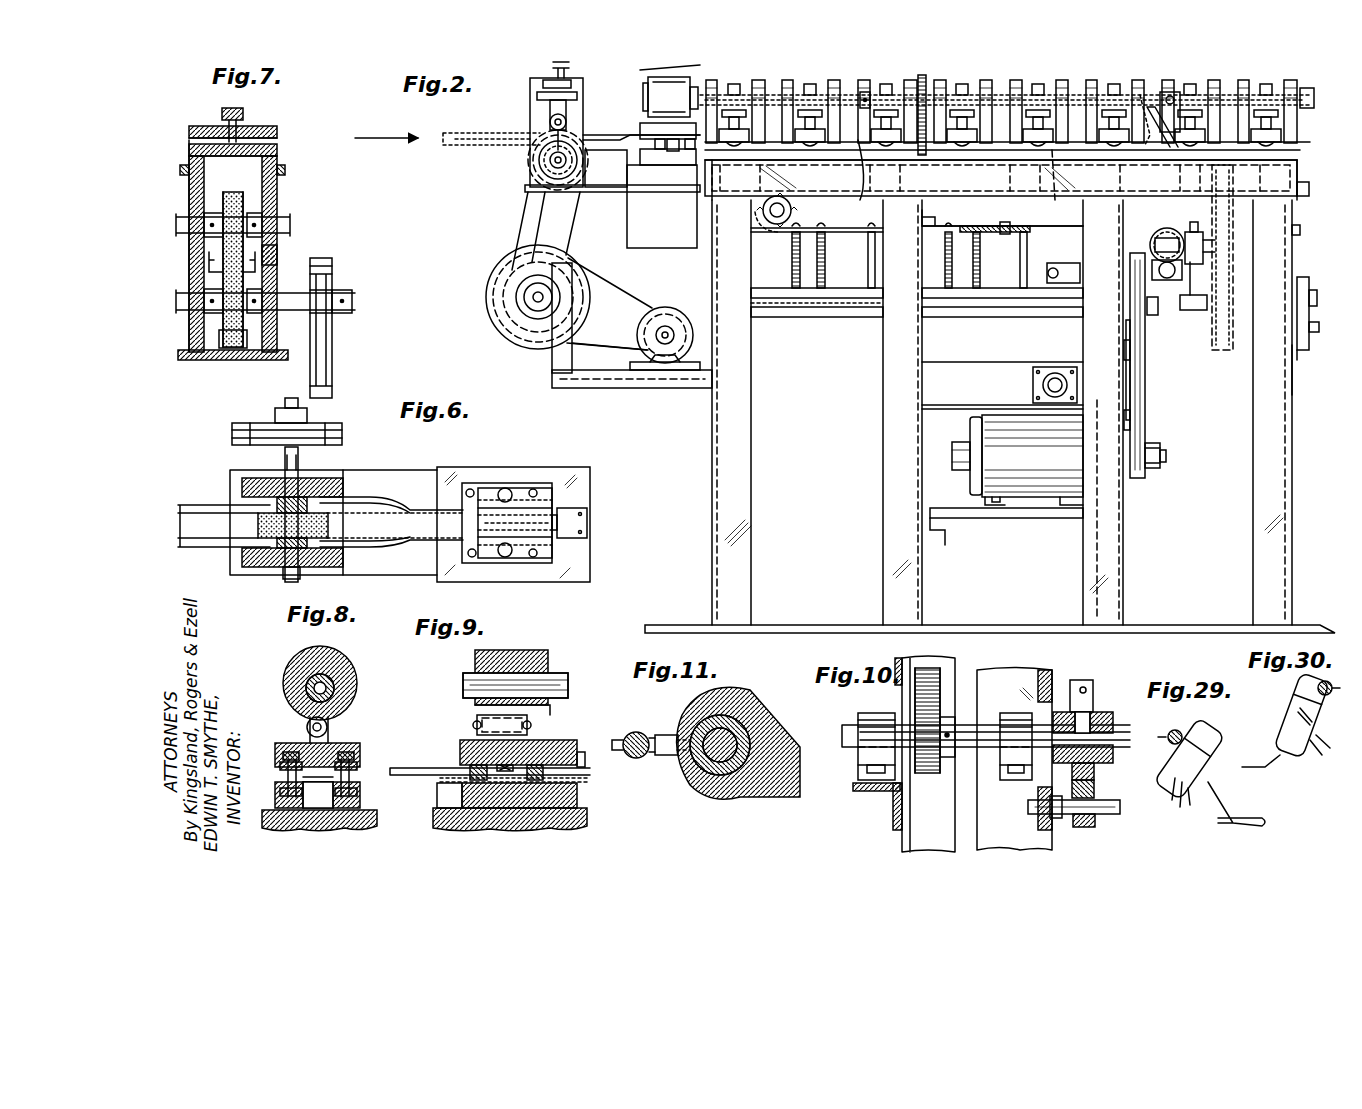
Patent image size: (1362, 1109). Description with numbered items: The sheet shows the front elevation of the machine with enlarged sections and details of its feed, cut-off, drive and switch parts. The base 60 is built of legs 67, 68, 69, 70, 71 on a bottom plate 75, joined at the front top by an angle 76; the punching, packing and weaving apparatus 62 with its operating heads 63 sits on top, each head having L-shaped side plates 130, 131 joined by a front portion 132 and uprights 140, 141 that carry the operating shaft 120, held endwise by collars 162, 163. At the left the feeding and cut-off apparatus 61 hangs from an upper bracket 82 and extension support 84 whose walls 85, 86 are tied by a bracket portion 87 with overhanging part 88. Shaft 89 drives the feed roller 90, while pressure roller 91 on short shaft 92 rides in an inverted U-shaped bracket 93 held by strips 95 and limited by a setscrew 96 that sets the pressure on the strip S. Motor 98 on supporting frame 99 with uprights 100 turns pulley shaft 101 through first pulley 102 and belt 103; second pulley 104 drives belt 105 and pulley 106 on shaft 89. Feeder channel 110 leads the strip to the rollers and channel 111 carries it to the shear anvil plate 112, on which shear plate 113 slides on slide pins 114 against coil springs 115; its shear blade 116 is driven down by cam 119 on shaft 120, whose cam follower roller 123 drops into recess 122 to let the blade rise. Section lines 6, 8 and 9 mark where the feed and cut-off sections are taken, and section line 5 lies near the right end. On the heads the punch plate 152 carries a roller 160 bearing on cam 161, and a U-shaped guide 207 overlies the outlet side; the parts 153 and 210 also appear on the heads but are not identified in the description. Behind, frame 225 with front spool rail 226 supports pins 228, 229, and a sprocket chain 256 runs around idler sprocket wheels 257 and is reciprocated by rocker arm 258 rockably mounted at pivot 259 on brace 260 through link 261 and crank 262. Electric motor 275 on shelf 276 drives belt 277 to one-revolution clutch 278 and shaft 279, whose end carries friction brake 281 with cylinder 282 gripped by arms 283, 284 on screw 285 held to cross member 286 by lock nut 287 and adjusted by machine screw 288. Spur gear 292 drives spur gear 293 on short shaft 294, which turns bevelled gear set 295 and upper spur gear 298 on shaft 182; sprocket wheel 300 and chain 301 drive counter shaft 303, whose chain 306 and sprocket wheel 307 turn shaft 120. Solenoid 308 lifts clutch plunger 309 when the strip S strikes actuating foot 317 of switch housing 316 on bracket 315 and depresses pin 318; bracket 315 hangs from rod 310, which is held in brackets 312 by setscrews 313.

In FIG. 2, the section line 5 is at (1215, 66).
In FIG. 2, the section line 6 is at (700, 58).
In FIG. 6, the section line 8 is at (505, 612).
In FIG. 9, the section line 8 is at (503, 619).
In FIG. 6, the section line 9 is at (620, 523).
In FIG. 2, the base or frame 60 is at (1298, 498).
In FIG. 10, the base or frame 60 is at (900, 846).
In FIG. 7, the feeding and cut-off apparatus 61 is at (312, 160).
In FIG. 2, the feeding and cut-off apparatus 61 is at (500, 204).
In FIG. 6, the feeding and cut-off apparatus 61 is at (595, 470).
In FIG. 8, the feeding and cut-off apparatus 61 is at (343, 655).
In FIG. 9, the feeding and cut-off apparatus 61 is at (590, 655).
In FIG. 2, the punching, packing, and weaving apparatus 62 is at (1095, 95).
In FIG. 2, the operating head 63 is at (865, 80).
In FIG. 11, the operating head 63 is at (775, 798).
In FIG. 2, the leg 67 is at (752, 551).
In FIG. 2, the leg 68 is at (912, 581).
In FIG. 2, the leg 69 is at (1088, 589).
In FIG. 2, the leg 70 is at (1272, 586).
In FIG. 10, the leg 71 is at (1000, 688).
In FIG. 2, the bottom plate 75 is at (1168, 625).
In FIG. 2, the angle 76 is at (817, 243).
In FIG. 2, the upper bracket 82 is at (628, 164).
In FIG. 6, the upper bracket 82 is at (565, 467).
In FIG. 8, the upper bracket 82 is at (372, 830).
In FIG. 9, the upper bracket 82 is at (588, 825).
In FIG. 7, the extension support 84 is at (258, 360).
In FIG. 2, the extension support 84 is at (607, 190).
In FIG. 6, the extension support 84 is at (385, 478).
In FIG. 7, the vertical wall 85 is at (192, 360).
In FIG. 2, the vertical wall 85 is at (535, 192).
In FIG. 6, the vertical wall 85 is at (248, 568).
In FIG. 7, the vertical wall 86 is at (277, 333).
In FIG. 6, the vertical wall 86 is at (240, 475).
In FIG. 7, the bracket portion 87 is at (277, 144).
In FIG. 2, the bracket portion 87 is at (530, 82).
In FIG. 7, the overhanging part 88 is at (262, 126).
In FIG. 2, the overhanging part 88 is at (571, 82).
In FIG. 7, the shaft 89 is at (353, 301).
In FIG. 2, the shaft 89 is at (533, 160).
In FIG. 6, the shaft 89 is at (285, 454).
In FIG. 7, the feed roller 90 is at (233, 348).
In FIG. 2, the feed roller 90 is at (536, 170).
In FIG. 7, the pressure roller 91 is at (236, 190).
In FIG. 2, the pressure roller 91 is at (548, 110).
In FIG. 6, the pressure roller 91 is at (300, 520).
In FIG. 7, the short shaft 92 is at (290, 222).
In FIG. 2, the short shaft 92 is at (568, 118).
In FIG. 6, the short shaft 92 is at (288, 580).
In FIG. 7, the inverted U-shaped bracket 93 is at (277, 195).
In FIG. 2, the inverted U-shaped bracket 93 is at (567, 104).
In FIG. 6, the inverted U-shaped bracket 93 is at (302, 478).
In FIG. 7, the strip 95 is at (185, 165).
In FIG. 2, the strip 95 is at (540, 95).
In FIG. 7, the setscrew 96 is at (244, 109).
In FIG. 2, the setscrew 96 is at (553, 65).
In FIG. 2, the motor 98 is at (672, 308).
In FIG. 2, the supporting frame 99 is at (652, 388).
In FIG. 2, the vertical upright 100 is at (552, 365).
In FIG. 2, the pulley shaft 101 is at (526, 300).
In FIG. 2, the first pulley 102 is at (518, 320).
In FIG. 2, the belt 103 is at (612, 350).
In FIG. 2, the second pulley 104 is at (486, 297).
In FIG. 7, the belt 105 is at (330, 363).
In FIG. 2, the belt 105 is at (515, 235).
In FIG. 6, the belt 105 is at (240, 432).
In FIG. 7, the pulley 106 is at (333, 271).
In FIG. 2, the pulley 106 is at (530, 157).
In FIG. 6, the pulley 106 is at (318, 418).
In FIG. 7, the feeder channel 110 is at (258, 265).
In FIG. 2, the feeder channel 110 is at (458, 147).
In FIG. 6, the feeder channel 110 is at (196, 550).
In FIG. 2, the channel 111 is at (592, 145).
In FIG. 6, the channel 111 is at (400, 550).
In FIG. 8, the channel 111 is at (330, 785).
In FIG. 9, the channel 111 is at (420, 775).
In FIG. 2, the shear anvil plate 112 is at (668, 168).
In FIG. 8, the shear anvil plate 112 is at (310, 808).
In FIG. 9, the shear anvil plate 112 is at (578, 800).
In FIG. 2, the shear plate 113 is at (640, 130).
In FIG. 6, the shear plate 113 is at (462, 490).
In FIG. 8, the shear plate 113 is at (305, 743).
In FIG. 9, the shear plate 113 is at (572, 736).
In FIG. 2, the slide pin 114 is at (657, 150).
In FIG. 6, the slide pin 114 is at (470, 489).
In FIG. 8, the slide pin 114 is at (358, 770).
In FIG. 9, the slide pin 114 is at (470, 770).
In FIG. 6, the coil spring 115 is at (502, 488).
In FIG. 8, the coil spring 115 is at (283, 755).
In FIG. 9, the coil spring 115 is at (503, 808).
In FIG. 2, the shear blade 116 is at (670, 97).
In FIG. 6, the shear blade 116 is at (588, 530).
In FIG. 9, the shear blade 116 is at (585, 760).
In FIG. 2, the cam 119 is at (640, 84).
In FIG. 6, the cam 119 is at (556, 495).
In FIG. 8, the cam 119 is at (355, 673).
In FIG. 9, the cam 119 is at (520, 650).
In FIG. 2, the operating shaft 120 is at (710, 95).
In FIG. 6, the operating shaft 120 is at (556, 505).
In FIG. 8, the operating shaft 120 is at (300, 672).
In FIG. 9, the operating shaft 120 is at (560, 673).
In FIG. 11, the operating shaft 120 is at (718, 752).
In FIG. 8, the indentation 122 is at (352, 706).
In FIG. 9, the indentation 122 is at (530, 722).
In FIG. 2, the cam follower roller 123 is at (676, 155).
In FIG. 8, the cam follower roller 123 is at (312, 690).
In FIG. 9, the cam follower roller 123 is at (478, 718).
In FIG. 2, the side plate 130 is at (716, 190).
In FIG. 2, the side plate 131 is at (822, 190).
In FIG. 2, the connecting portion 132 is at (940, 190).
In FIG. 2, the upright 140 is at (1290, 90).
In FIG. 11, the upright 140 is at (760, 678).
In FIG. 2, the upright 141 is at (910, 88).
In FIG. 2, the punch plate 152 is at (1290, 131).
In FIG. 2, the pin 153 is at (1069, 175).
In FIG. 2, the roller 160 is at (1056, 88).
In FIG. 2, the cam 161 is at (1310, 114).
In FIG. 2, the collar 162 is at (670, 65).
In FIG. 2, the collar 163 is at (1302, 85).
In FIG. 2, the shaft 182 is at (1305, 196).
In FIG. 29, the U-shaped guide 207 is at (1260, 827).
In FIG. 2, the guide 210 is at (1083, 178).
In FIG. 2, the frame 225 is at (840, 318).
In FIG. 2, the front spool rail 226 is at (858, 318).
In FIG. 2, the pin 228 is at (792, 265).
In FIG. 2, the pin 229 is at (825, 273).
In FIG. 2, the sprocket chain 256 is at (790, 228).
In FIG. 2, the idler sprocket wheel 257 is at (792, 210).
In FIG. 2, the rocker arm 258 is at (1040, 337).
In FIG. 2, the rocker mounting 259 is at (1055, 372).
In FIG. 2, the brace 260 is at (930, 391).
In FIG. 2, the link 261 is at (1047, 280).
In FIG. 2, the crank 262 is at (1172, 300).
In FIG. 2, the electric motor 275 is at (1035, 500).
In FIG. 2, the base plate or shelf 276 is at (972, 520).
In FIG. 2, the belt 277 is at (1162, 441).
In FIG. 2, the one-revolution clutch 278 is at (1137, 340).
In FIG. 2, the shaft 279 is at (1183, 312).
In FIG. 10, the shaft 279 is at (962, 720).
In FIG. 2, the friction brake 281 is at (1312, 278).
In FIG. 10, the friction brake 281 is at (1120, 798).
In FIG. 2, the cylinder 282 is at (1315, 292).
In FIG. 10, the cylinder 282 is at (1108, 712).
In FIG. 2, the arm 283 is at (1297, 366).
In FIG. 10, the arm 283 is at (1082, 828).
In FIG. 2, the arm 284 is at (1308, 301).
In FIG. 10, the arm 284 is at (1068, 680).
In FIG. 2, the screw 285 is at (1318, 333).
In FIG. 10, the screw 285 is at (1118, 818).
In FIG. 2, the cross member 286 is at (1282, 351).
In FIG. 10, the cross member 286 is at (1037, 828).
In FIG. 2, the outer lock nut 287 is at (1315, 351).
In FIG. 10, the outer lock nut 287 is at (1100, 790).
In FIG. 10, the machine screw 288 is at (1086, 682).
In FIG. 2, the spur gear 292 is at (1208, 355).
In FIG. 10, the spur gear 292 is at (927, 775).
In FIG. 2, the spur gear 293 is at (1230, 222).
In FIG. 10, the spur gear 293 is at (925, 681).
In FIG. 2, the short shaft 294 is at (1300, 230).
In FIG. 2, the bevelled gear set 295 is at (1165, 228).
In FIG. 2, the upper spur gear 298 is at (1240, 170).
In FIG. 2, the sprocket wheel 300 is at (1010, 178).
In FIG. 2, the sprocket chain 301 is at (1005, 235).
In FIG. 2, the counter shaft 303 is at (950, 235).
In FIG. 2, the sprocket chain 306 is at (912, 108).
In FIG. 2, the sprocket wheel 307 is at (950, 92).
In FIG. 2, the electric solenoid 308 is at (1130, 393).
In FIG. 2, the clutch plunger 309 is at (1132, 419).
In FIG. 2, the bar or rod 310 is at (1314, 98).
In FIG. 11, the bar or rod 310 is at (640, 758).
In FIG. 29, the bar or rod 310 is at (1182, 735).
In FIG. 30, the bar or rod 310 is at (1325, 680).
In FIG. 2, the bracket 312 is at (867, 92).
In FIG. 11, the bracket 312 is at (666, 757).
In FIG. 11, the setscrew 313 is at (630, 730).
In FIG. 2, the bracket 315 is at (1172, 92).
In FIG. 29, the bracket 315 is at (1195, 739).
In FIG. 30, the bracket 315 is at (1291, 710).
In FIG. 2, the switch housing 316 is at (1178, 115).
In FIG. 29, the switch housing 316 is at (1198, 761).
In FIG. 30, the switch housing 316 is at (1305, 751).
In FIG. 2, the actuating foot 317 is at (1140, 95).
In FIG. 29, the actuating foot 317 is at (1218, 796).
In FIG. 30, the actuating foot 317 is at (1278, 766).
In FIG. 2, the switch actuating pin 318 is at (1170, 148).
In FIG. 30, the switch actuating pin 318 is at (1295, 715).
In FIG. 7, the strip S is at (212, 265).
In FIG. 6, the strip S is at (218, 510).
In FIG. 8, the strip S is at (325, 778).
In FIG. 9, the strip S is at (580, 782).